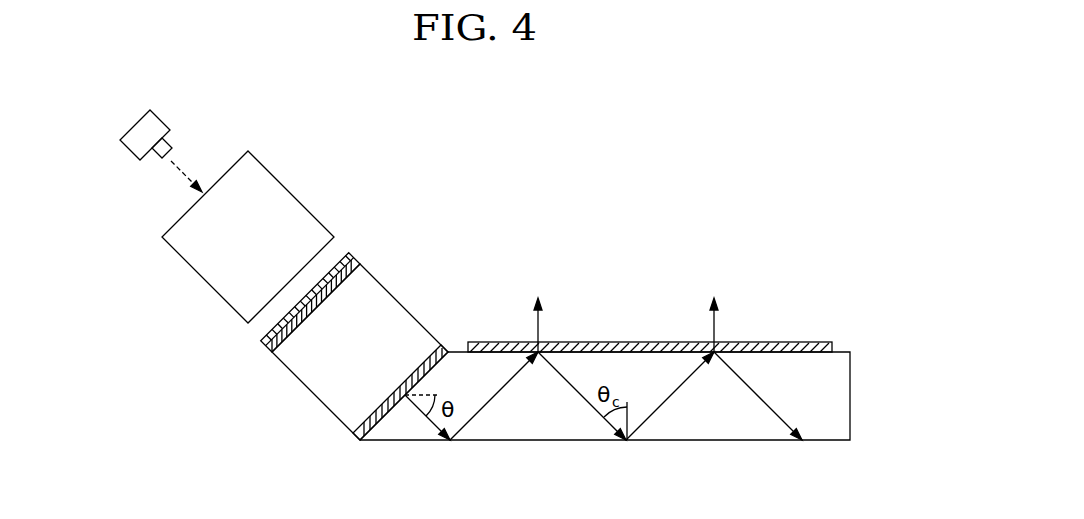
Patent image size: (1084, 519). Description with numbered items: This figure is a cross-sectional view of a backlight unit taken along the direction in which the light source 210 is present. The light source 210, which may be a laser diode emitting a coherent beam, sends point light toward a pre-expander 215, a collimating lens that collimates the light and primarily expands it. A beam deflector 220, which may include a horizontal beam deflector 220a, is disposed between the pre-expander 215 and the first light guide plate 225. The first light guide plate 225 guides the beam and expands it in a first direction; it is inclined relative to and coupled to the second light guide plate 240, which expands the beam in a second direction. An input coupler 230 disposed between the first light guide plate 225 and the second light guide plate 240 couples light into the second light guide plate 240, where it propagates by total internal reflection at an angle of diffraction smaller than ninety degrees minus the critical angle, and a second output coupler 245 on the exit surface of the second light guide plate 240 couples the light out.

The light source 210 is at (135, 143).
The pre-expander 215 is at (208, 273).
The beam deflector 220 is at (444, 234).
The horizontal beam deflector 220a is at (352, 252).
The first light guide plate 225 is at (327, 382).
The input coupler 230 is at (360, 438).
The second light guide plate 240 is at (840, 408).
The second output coupler 245 is at (833, 348).